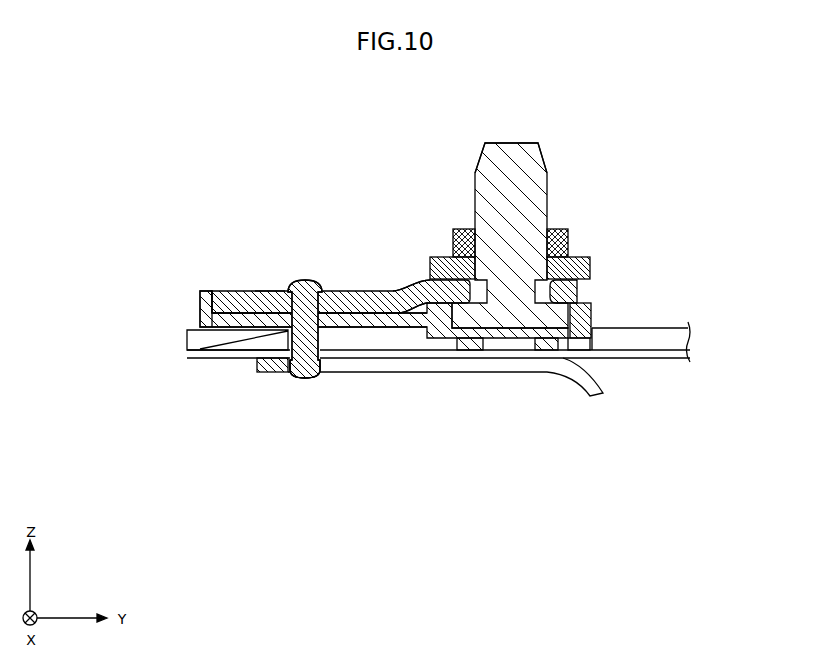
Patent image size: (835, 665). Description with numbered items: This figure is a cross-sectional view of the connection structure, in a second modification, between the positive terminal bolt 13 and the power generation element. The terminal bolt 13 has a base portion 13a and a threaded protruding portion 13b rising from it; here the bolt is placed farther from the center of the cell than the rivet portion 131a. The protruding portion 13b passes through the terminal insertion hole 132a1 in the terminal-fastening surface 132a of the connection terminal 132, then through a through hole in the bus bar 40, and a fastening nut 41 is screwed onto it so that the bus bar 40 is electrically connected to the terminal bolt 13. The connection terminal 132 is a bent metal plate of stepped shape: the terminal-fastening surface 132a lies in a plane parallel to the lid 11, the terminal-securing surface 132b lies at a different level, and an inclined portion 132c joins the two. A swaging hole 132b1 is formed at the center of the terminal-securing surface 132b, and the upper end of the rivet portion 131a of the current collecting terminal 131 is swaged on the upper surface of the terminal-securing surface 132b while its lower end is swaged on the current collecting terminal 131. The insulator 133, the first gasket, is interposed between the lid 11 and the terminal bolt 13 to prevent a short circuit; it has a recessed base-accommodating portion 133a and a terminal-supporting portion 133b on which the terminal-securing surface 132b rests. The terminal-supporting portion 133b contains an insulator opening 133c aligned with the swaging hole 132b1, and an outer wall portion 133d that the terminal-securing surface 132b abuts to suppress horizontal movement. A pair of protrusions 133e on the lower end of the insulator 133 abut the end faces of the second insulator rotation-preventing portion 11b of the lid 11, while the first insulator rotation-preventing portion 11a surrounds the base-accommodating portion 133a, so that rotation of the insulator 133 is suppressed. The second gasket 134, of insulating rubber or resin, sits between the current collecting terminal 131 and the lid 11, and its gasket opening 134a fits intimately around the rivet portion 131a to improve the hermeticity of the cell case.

The lid 11 is at (668, 342).
The first insulator rotation-preventing portion 11a is at (578, 322).
The second insulator rotation-preventing portion 11b is at (512, 350).
The terminal bolt (positive electrode) 13 is at (458, 205).
The base portion 13a is at (445, 262).
The protruding portion 13b is at (498, 210).
The bus bar 40 is at (592, 264).
The fastening nut 41 is at (570, 231).
The current collecting terminal (positive electrode) 131 is at (275, 372).
The rivet portion 131a is at (320, 365).
The connection terminal (positive electrode) 132 is at (375, 287).
The terminal-fastening surface 132a is at (580, 294).
The terminal insertion hole 132a1 is at (590, 337).
The terminal-securing surface 132b is at (223, 305).
The swaging hole 132b1 is at (270, 290).
The inclined portion 132c is at (410, 300).
The insulator (first gasket) 133 is at (195, 309).
The base-accommodating portion 133a is at (596, 329).
The terminal-supporting portion 133b is at (285, 321).
The insulator opening 133c is at (288, 322).
The outer wall portion 133d is at (198, 303).
The protrusions 133e is at (473, 340).
The gasket (second gasket) 134 is at (385, 360).
The gasket opening 134a is at (262, 365).